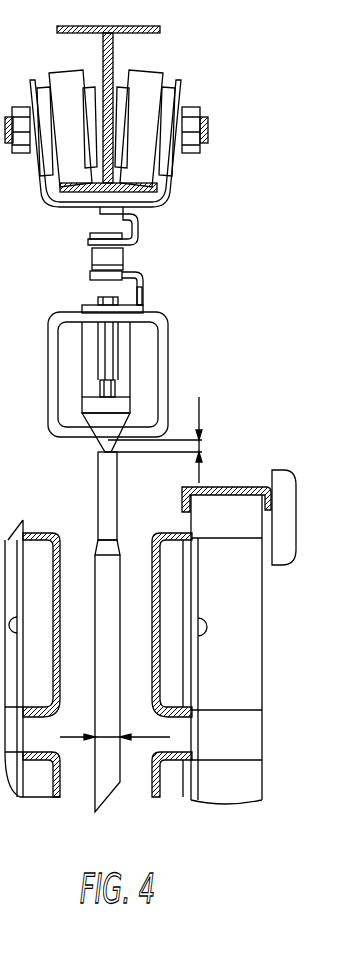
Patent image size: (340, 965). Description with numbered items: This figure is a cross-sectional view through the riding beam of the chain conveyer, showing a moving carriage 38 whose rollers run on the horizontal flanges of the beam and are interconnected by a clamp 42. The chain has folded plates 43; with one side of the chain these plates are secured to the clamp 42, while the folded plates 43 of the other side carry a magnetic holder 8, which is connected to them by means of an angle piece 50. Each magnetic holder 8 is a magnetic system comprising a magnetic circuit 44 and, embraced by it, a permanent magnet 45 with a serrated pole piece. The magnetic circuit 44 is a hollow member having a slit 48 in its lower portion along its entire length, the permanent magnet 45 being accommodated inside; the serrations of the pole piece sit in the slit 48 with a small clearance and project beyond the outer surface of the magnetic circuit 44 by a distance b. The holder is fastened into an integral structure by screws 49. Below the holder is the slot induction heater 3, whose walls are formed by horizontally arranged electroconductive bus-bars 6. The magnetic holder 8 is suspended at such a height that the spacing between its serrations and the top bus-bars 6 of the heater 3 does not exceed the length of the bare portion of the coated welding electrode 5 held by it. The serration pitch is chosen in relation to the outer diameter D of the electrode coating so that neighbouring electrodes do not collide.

The moving carriage 38 is at (192, 80).
The clamp 42 is at (183, 98).
The folded plates 43 is at (138, 241).
The angle piece 50 is at (141, 302).
The magnetic holder 8 is at (146, 311).
The magnetic circuit 44 is at (52, 328).
The permanent magnet 45 is at (125, 363).
The screws 49 is at (108, 337).
The slit 48 is at (93, 445).
The coated welding electrode 5 is at (110, 786).
The electroconductive bus-bars 6 is at (33, 533).
The slot induction heater 3 is at (224, 484).
The distance b is at (193, 453).
The outer diameter of the coating D is at (115, 726).